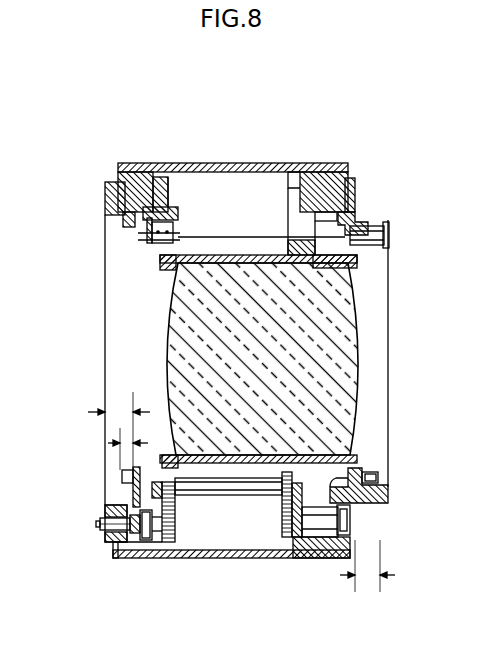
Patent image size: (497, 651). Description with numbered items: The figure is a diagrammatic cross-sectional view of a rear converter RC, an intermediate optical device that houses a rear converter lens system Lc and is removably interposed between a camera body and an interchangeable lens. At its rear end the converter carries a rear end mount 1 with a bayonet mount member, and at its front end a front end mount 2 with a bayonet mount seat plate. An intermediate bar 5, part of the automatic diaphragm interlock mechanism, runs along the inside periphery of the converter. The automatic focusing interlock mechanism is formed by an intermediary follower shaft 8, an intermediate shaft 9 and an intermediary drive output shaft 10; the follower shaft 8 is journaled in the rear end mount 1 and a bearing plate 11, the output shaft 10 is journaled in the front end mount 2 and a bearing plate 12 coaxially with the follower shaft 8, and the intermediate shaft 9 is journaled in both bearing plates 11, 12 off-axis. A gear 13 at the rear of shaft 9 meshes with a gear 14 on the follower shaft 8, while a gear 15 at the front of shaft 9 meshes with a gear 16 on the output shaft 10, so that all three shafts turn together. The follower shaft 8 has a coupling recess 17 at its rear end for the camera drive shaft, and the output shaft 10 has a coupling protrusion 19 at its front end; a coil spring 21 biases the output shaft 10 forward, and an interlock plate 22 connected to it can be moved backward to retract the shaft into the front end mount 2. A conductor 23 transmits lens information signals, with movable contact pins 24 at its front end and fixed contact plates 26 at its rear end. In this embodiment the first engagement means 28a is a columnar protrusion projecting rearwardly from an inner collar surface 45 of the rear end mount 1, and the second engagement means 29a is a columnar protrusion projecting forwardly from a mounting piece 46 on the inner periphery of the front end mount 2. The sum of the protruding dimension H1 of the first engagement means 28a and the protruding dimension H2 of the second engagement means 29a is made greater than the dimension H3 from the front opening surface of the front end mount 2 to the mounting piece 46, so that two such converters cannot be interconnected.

The rear converter RC is at (305, 160).
The rear end mount 1 is at (358, 222).
The front end mount 2 is at (106, 198).
The fixed contact plates 26 is at (390, 237).
The conductor 23 is at (233, 237).
The movable contact pins 24 is at (142, 240).
The rear converter lens system Lc is at (275, 374).
The intermediate bar 5 is at (248, 480).
The dimension H3 is at (119, 431).
The protruding dimension H2 is at (130, 450).
The protruding dimension H1 is at (364, 580).
The second engagement means 29a is at (122, 476).
The mounting piece 46 is at (115, 500).
The coupling protrusion 19 is at (97, 524).
The interlock plate 22 is at (130, 533).
The coil spring 21 is at (145, 540).
The gear 16 is at (176, 540).
The gear 15 is at (177, 500).
The intermediate shaft 9 is at (228, 495).
The gear 14 is at (283, 540).
The gear 13 is at (283, 503).
The bearing plate 11 is at (292, 556).
The coupling recess 17 is at (355, 520).
The intermediary follower shaft 8 is at (323, 558).
The intermediary drive output shaft 10 is at (127, 558).
The bearing plate 12 is at (157, 550).
The first engagement means 28a is at (380, 474).
The inner collar surface 45 is at (362, 470).